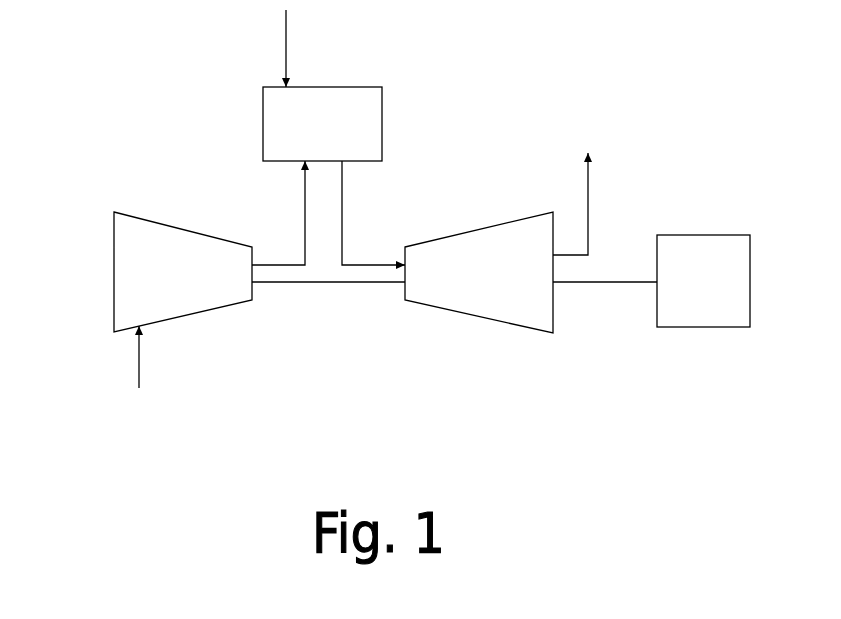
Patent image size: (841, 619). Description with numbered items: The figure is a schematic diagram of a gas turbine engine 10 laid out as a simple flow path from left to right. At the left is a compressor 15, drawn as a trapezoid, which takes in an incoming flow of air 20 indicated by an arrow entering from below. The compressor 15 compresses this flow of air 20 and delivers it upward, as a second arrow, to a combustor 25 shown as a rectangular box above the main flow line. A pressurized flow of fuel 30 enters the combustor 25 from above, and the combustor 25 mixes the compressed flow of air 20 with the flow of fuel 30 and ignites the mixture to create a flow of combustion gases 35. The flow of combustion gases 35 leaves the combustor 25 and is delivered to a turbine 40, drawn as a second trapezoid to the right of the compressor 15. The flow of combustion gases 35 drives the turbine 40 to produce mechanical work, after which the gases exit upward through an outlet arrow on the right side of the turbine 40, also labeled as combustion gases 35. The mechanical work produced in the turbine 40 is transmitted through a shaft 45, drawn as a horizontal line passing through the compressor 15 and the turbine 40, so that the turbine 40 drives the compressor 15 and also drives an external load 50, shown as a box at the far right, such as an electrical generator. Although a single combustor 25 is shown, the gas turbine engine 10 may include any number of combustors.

The gas turbine engine 10 is at (97, 60).
The compressor 15 is at (183, 272).
The flow of air 20 is at (139, 365).
The combustor 25 is at (322, 124).
The flow of fuel 30 is at (286, 39).
The flow of combustion gases 35 is at (343, 215).
The turbine 40 is at (479, 272).
The shaft 45 is at (367, 283).
The external load 50 is at (703, 281).